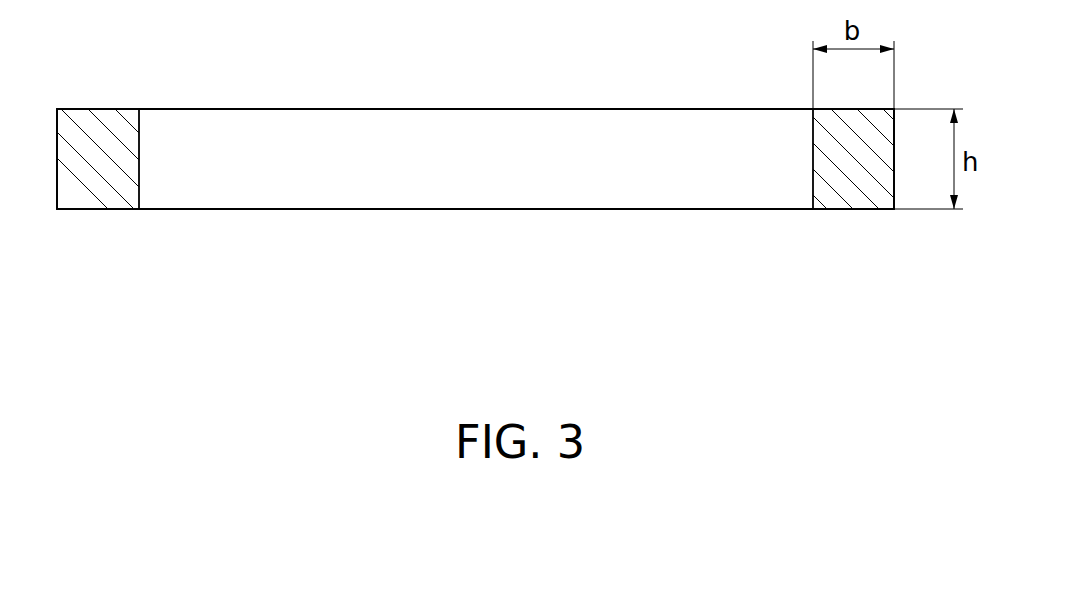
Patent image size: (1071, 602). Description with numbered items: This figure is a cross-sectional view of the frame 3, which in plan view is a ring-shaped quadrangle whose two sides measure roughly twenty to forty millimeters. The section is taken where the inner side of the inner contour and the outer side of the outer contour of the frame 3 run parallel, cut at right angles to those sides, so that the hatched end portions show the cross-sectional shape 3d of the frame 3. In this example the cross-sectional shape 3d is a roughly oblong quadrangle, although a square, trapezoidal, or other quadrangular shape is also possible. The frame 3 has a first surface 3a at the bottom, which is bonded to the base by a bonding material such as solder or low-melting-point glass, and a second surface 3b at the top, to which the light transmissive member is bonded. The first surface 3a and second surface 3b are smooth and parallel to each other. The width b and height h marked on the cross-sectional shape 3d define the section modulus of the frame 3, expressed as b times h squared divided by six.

The frame 3 is at (345, 132).
The first surface 3a is at (512, 210).
The second surface 3b is at (518, 109).
The cross-sectional shape 3d is at (848, 202).